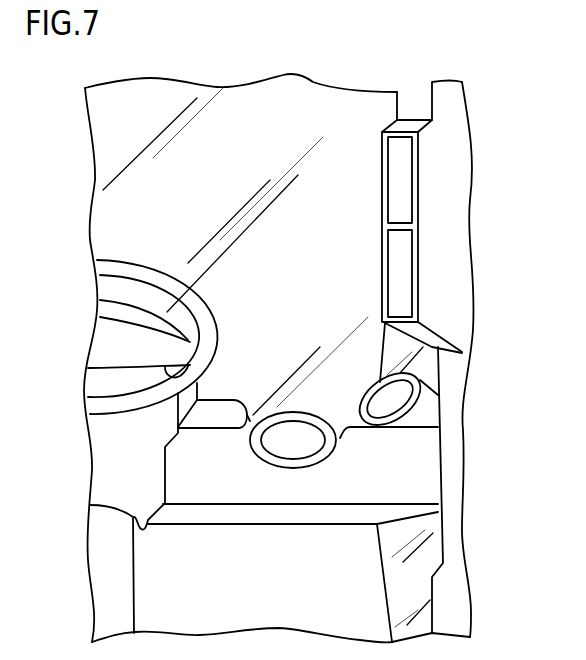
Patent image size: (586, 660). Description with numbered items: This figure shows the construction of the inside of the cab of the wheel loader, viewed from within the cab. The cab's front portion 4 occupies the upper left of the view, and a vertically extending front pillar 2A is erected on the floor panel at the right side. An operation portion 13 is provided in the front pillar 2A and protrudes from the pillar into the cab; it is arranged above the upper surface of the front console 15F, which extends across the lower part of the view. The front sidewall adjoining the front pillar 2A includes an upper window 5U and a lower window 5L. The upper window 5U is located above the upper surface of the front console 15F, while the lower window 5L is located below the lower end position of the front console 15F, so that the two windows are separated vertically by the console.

The front portion 4 is at (125, 213).
The operation portion 13 is at (400, 180).
The upper window 5U is at (418, 366).
The front pillar 2A is at (453, 420).
The front console 15F is at (410, 467).
The lower window 5L is at (423, 562).